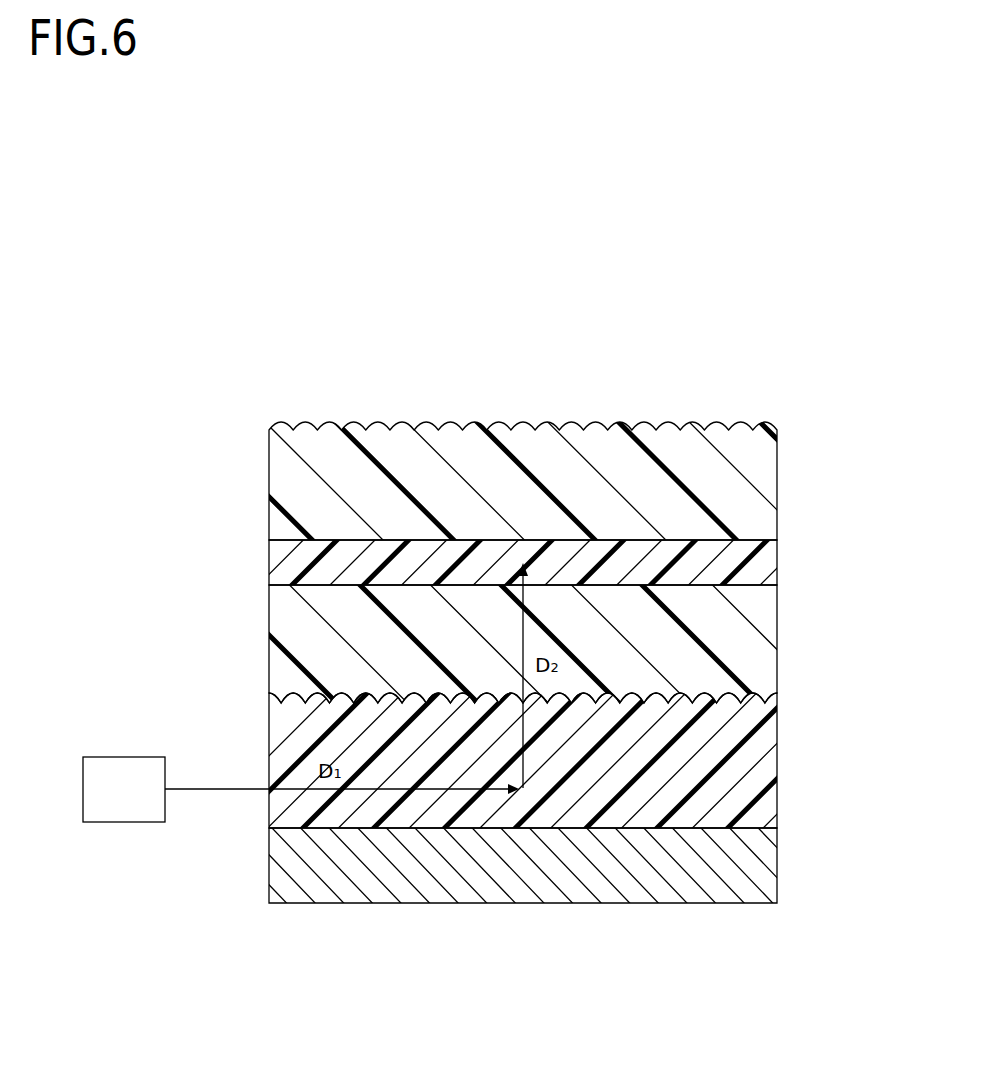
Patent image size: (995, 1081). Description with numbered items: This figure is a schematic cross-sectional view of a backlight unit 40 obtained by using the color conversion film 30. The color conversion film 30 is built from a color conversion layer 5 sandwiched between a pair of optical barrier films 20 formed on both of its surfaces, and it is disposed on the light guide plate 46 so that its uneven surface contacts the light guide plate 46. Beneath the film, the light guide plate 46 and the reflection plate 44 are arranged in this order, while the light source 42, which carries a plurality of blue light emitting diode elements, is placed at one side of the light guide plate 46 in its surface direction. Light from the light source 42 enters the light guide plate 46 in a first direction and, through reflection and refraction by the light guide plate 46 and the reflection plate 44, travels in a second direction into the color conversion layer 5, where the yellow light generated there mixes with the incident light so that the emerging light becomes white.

The backlight unit 40 is at (566, 584).
The color conversion film 30 is at (544, 565).
The optical barrier film 20 is at (777, 483).
The color conversion layer 5 is at (777, 563).
The light guide plate 46 is at (777, 767).
The reflection plate 44 is at (777, 865).
The light source 42 is at (128, 823).